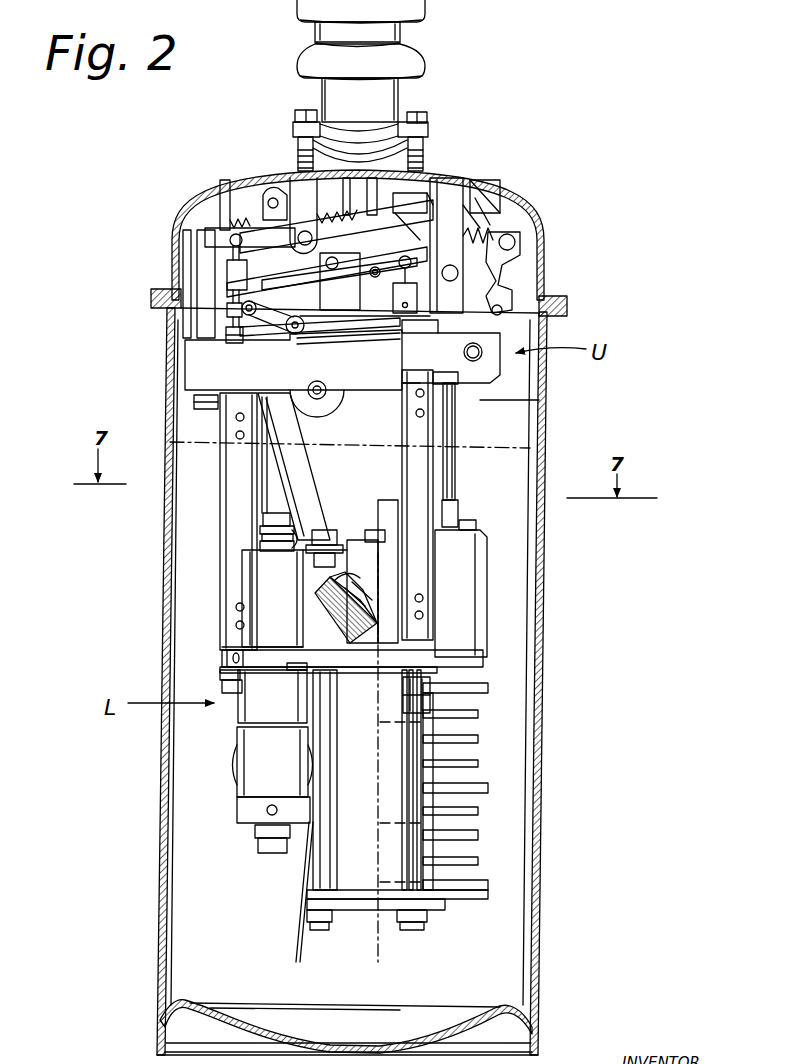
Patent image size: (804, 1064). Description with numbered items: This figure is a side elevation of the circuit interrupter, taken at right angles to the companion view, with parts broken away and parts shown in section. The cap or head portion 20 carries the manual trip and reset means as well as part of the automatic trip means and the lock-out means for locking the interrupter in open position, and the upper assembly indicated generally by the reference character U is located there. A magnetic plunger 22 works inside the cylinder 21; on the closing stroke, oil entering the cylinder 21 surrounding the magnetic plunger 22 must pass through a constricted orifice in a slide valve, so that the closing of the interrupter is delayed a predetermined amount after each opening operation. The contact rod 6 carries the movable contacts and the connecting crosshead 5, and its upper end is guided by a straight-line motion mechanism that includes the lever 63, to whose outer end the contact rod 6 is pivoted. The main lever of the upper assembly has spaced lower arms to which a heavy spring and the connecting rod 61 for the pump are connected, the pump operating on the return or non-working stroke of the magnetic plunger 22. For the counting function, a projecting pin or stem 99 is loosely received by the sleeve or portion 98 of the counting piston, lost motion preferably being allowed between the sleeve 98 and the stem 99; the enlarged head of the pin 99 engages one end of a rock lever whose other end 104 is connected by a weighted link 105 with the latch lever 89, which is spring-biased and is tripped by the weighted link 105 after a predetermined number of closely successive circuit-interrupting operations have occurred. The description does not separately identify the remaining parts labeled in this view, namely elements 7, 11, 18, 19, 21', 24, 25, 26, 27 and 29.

The connecting crosshead 5 is at (255, 832).
The contact rod 6 is at (278, 487).
The insulator stack 7 is at (296, 560).
The contact housing 11 is at (261, 586).
The tank 18 is at (152, 755).
The tank liner 19 is at (168, 848).
The cap or head portion 20 is at (528, 203).
The cylinder 21 is at (471, 791).
The coil stack top plate 21' is at (478, 698).
The magnetic plunger 22 is at (381, 505).
The insulator bushing 24 is at (397, 64).
The rod 25 is at (293, 943).
The contact 26 is at (315, 613).
The contact support 27 is at (362, 578).
The housing 29 is at (463, 577).
The connecting rod 61 is at (291, 465).
The lever 63 is at (228, 243).
The latch lever 89 is at (370, 257).
The sleeve or portion of the counting piston 98 is at (459, 506).
The projecting pin 99 is at (456, 469).
The end of the rock lever 104 is at (230, 340).
The weighted link 105 is at (228, 251).